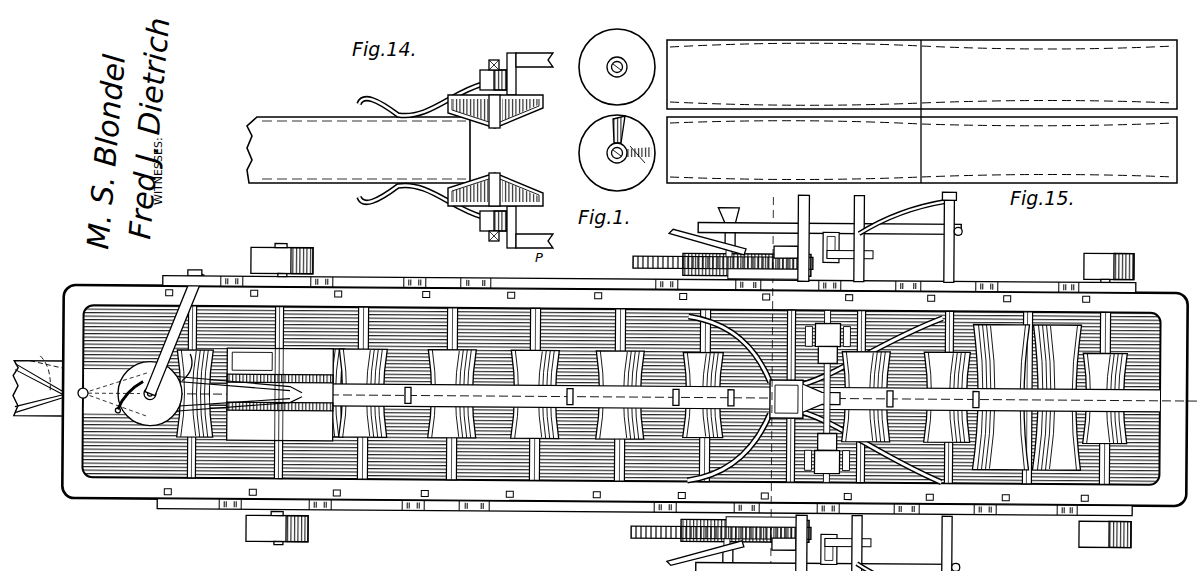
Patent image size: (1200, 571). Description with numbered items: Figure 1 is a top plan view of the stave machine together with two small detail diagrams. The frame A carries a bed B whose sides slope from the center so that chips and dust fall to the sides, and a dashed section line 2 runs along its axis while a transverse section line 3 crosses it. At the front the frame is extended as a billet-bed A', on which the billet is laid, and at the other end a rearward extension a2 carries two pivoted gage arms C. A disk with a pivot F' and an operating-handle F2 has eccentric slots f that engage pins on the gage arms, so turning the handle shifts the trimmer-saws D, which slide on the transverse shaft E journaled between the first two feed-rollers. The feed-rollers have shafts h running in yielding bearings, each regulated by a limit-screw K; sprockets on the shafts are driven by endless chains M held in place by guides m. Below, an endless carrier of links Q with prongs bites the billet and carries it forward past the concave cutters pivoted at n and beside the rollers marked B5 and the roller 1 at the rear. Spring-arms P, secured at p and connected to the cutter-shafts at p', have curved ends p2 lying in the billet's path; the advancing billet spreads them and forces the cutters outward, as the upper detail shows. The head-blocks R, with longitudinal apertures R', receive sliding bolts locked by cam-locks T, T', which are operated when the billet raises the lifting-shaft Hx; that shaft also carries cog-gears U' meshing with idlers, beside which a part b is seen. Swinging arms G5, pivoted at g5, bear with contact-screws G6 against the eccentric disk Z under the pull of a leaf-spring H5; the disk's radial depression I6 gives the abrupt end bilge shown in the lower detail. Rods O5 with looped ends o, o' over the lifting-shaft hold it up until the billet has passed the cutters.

In FIG. 1, the operating-handle F2 is at (134, 302).
In FIG. 1, the gage arms C is at (46, 364).
In FIG. 1, the billet-bed A' is at (38, 400).
In FIG. 1, the rearward extension a2 is at (113, 394).
In FIG. 1, the pivot of the disk F' is at (150, 410).
In FIG. 1, the eccentric slots f is at (235, 380).
In FIG. 1, the transverse shaft E is at (252, 361).
In FIG. 1, the trimmer-saws D is at (280, 394).
In FIG. 1, the carrier-belt links Q is at (641, 397).
In FIG. 1, the pivot of swinging frame n is at (574, 395).
In FIG. 1, the bed B is at (556, 358).
In FIG. 1, the roller-shafts h is at (464, 460).
In FIG. 1, the limit-screw K is at (595, 298).
In FIG. 1, the chain guides m is at (646, 396).
In FIG. 1, the endless chains M is at (690, 396).
In FIG. 1, the lifting-shaft Hx is at (790, 325).
In FIG. 14, the spring-arms P is at (530, 66).
In FIG. 1, the spring-arms P is at (888, 395).
In FIG. 1, the frame A is at (975, 298).
In FIG. 1, the rods O5 is at (794, 407).
In FIG. 1, the inner ends of rods o is at (786, 383).
In FIG. 1, the fork o' is at (819, 396).
In FIG. 1, the cog-gear U' is at (723, 235).
In FIG. 1, the section line 3 is at (746, 228).
In FIG. 1, the lever b is at (812, 262).
In FIG. 1, the longitudinal aperture R' is at (829, 222).
In FIG. 1, the head-blocks R is at (813, 247).
In FIG. 1, the slide T' is at (855, 259).
In FIG. 1, the leaf-spring H5 is at (902, 218).
In FIG. 1, the contact-screws G6 is at (920, 233).
In FIG. 1, the pivot of swinging arms g5 is at (970, 237).
In FIG. 1, the cam-lock T is at (848, 552).
In FIG. 1, the swinging arms G5 is at (948, 559).
In FIG. 1, the large roller B5 is at (1000, 396).
In FIG. 1, the roller 1 is at (1108, 341).
In FIG. 1, the section line 2 is at (1194, 401).
In FIG. 14, the forward ends of spring-arms p2 is at (388, 110).
In FIG. 14, the spring-arm connection p' is at (484, 151).
In FIG. 14, the secured end of spring-arm p is at (498, 154).
In FIG. 15, the disk Z is at (617, 153).
In FIG. 15, the radial depression I6 is at (632, 147).